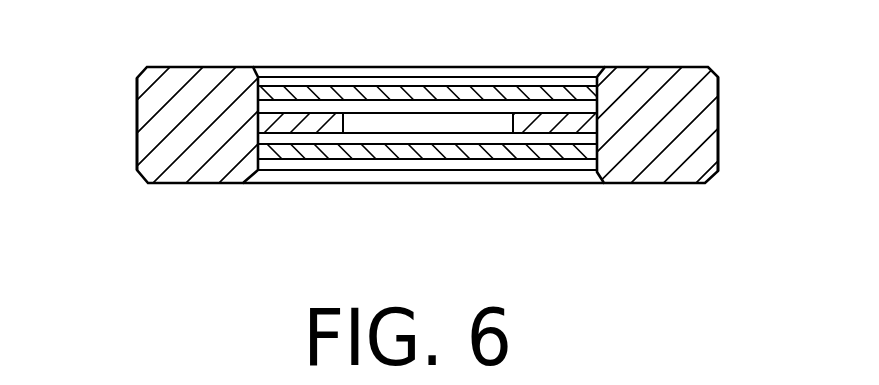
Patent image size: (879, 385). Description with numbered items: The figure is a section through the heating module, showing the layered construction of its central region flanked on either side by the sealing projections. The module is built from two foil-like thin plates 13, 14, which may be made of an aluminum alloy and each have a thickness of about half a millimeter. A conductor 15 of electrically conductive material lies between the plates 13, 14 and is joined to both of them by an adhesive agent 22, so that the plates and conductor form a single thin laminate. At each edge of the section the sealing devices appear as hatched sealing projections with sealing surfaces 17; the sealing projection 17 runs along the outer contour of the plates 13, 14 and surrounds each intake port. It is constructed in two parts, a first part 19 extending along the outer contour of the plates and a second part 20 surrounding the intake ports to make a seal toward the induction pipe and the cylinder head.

The plate 13 is at (377, 150).
The plate 14 is at (342, 90).
The conductor 15 is at (427, 106).
The sealing projection 17 is at (193, 118).
The first part 19 is at (695, 138).
The second part 20 is at (162, 127).
The adhesive agent 22 is at (281, 116).